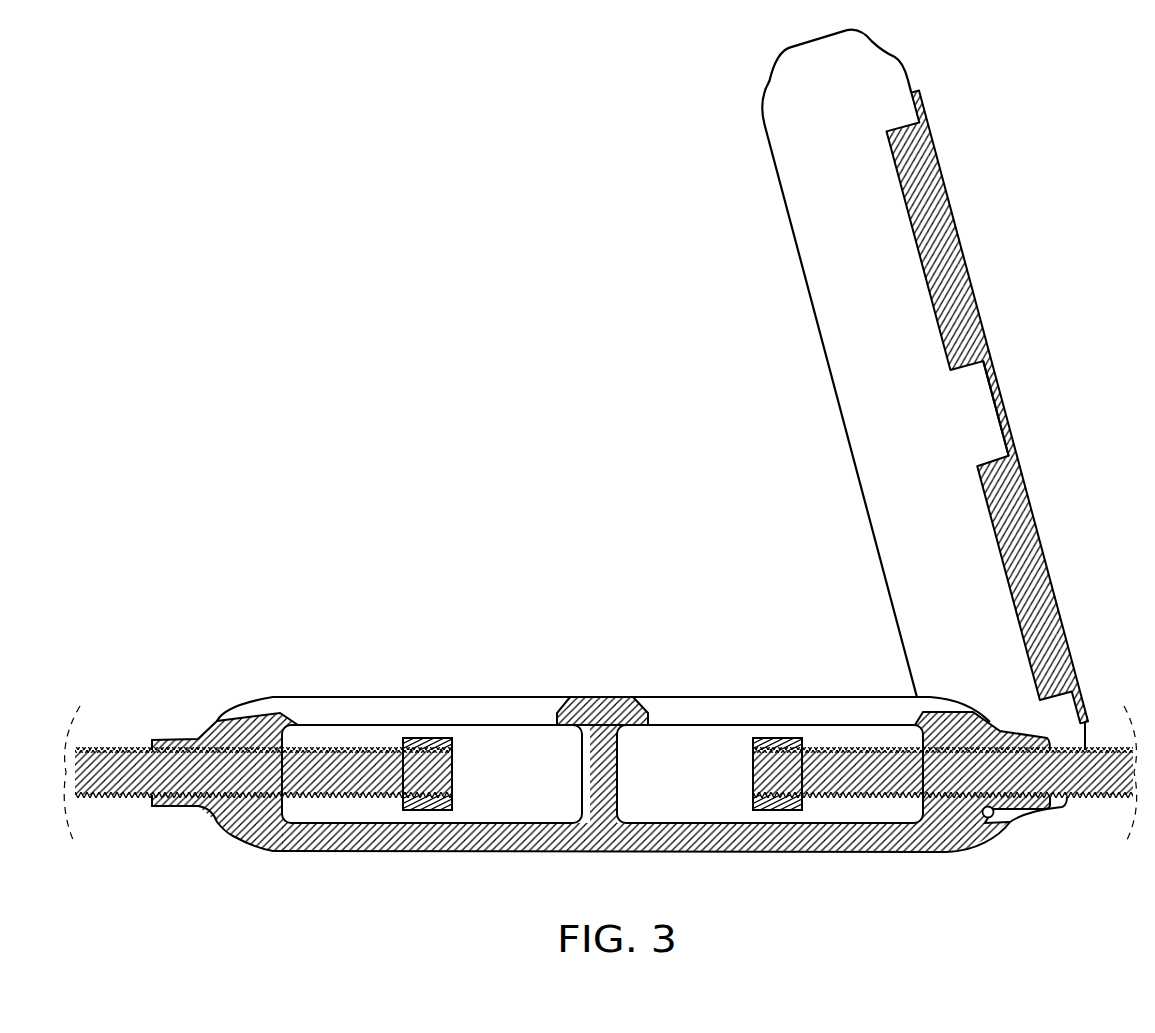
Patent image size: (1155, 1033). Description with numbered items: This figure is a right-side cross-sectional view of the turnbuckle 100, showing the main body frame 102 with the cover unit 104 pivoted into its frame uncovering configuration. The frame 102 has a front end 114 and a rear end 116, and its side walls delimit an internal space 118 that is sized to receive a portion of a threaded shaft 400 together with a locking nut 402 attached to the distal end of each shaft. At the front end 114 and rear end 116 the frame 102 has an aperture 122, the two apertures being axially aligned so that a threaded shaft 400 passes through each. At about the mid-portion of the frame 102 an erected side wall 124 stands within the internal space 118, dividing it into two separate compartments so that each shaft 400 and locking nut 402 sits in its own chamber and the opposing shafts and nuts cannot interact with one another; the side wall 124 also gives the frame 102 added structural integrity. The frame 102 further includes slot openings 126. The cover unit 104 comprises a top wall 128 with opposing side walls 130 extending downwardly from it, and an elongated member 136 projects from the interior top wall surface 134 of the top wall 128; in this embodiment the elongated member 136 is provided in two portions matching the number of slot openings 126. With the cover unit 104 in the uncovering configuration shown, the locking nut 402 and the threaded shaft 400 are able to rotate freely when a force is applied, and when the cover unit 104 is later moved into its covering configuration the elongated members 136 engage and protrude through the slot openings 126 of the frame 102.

The turnbuckle 100 is at (496, 229).
The main body frame 102 is at (391, 672).
The cover unit 104 is at (990, 184).
The front end 114 is at (183, 741).
The rear end 116 is at (1027, 811).
The internal space 118 is at (523, 799).
The aperture 122 is at (150, 746).
The side wall 124 is at (620, 777).
The slot opening 126 is at (652, 679).
The top wall 128 is at (983, 412).
The side wall 130 is at (904, 357).
The interior top wall surface 134 is at (995, 408).
The elongated member 136 is at (978, 412).
The threaded shaft 400 is at (312, 797).
The locking nut 402 is at (428, 807).